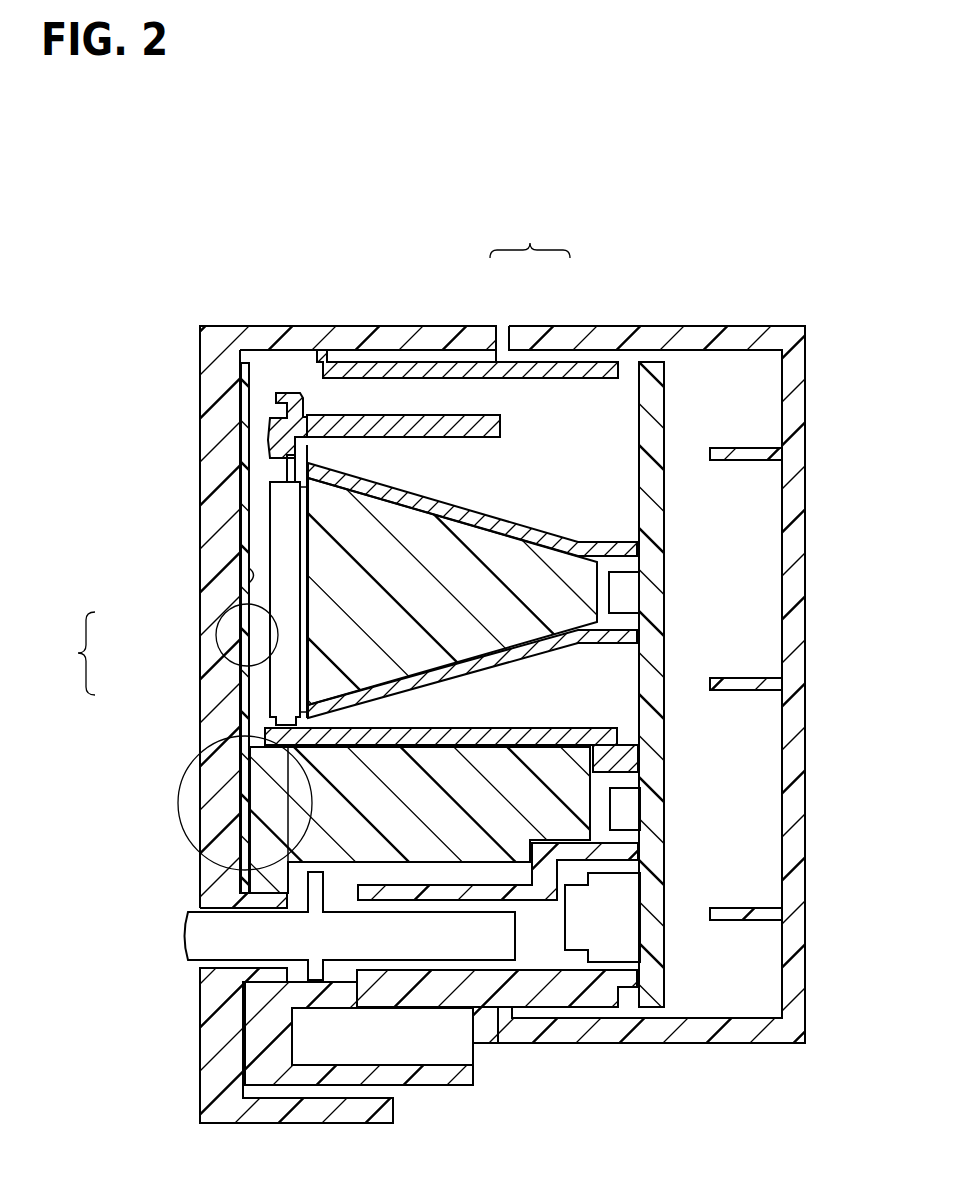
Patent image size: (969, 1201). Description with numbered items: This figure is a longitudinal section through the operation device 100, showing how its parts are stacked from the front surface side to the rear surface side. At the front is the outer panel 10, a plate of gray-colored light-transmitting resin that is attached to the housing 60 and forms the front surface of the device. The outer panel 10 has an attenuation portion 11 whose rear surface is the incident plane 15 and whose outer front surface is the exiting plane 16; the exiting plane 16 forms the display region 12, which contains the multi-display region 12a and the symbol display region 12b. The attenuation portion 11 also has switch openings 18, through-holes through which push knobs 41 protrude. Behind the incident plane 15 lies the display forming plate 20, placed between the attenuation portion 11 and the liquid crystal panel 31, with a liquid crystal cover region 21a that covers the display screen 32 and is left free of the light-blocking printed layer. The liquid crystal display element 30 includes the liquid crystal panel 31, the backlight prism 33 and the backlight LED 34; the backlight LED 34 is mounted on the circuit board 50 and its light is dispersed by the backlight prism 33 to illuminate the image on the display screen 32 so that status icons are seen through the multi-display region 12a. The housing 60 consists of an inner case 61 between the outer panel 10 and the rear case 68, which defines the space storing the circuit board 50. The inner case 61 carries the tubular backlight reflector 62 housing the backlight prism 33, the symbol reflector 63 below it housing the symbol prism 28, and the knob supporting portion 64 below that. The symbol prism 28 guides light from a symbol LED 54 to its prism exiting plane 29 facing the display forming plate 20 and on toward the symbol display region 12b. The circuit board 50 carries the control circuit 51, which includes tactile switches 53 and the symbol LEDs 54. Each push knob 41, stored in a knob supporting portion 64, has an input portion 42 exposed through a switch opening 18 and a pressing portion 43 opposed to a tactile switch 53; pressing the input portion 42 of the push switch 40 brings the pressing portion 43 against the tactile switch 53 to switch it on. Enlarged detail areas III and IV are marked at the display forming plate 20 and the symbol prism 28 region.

The operation device 100 is at (182, 326).
The outer panel 10 is at (207, 326).
The attenuation portion 11 is at (212, 410).
The exiting plane 16 is at (214, 440).
The incident plane 15 is at (243, 478).
The display forming plate 20 is at (252, 372).
The liquid crystal cover region 21a is at (246, 583).
The liquid crystal display element 30 is at (258, 515).
The liquid crystal panel 31 is at (312, 480).
The display screen 32 is at (300, 545).
The backlight prism 33 is at (342, 522).
The backlight LED 34 is at (623, 572).
The backlight reflector 62 is at (398, 510).
The symbol reflector 63 is at (445, 735).
The housing 60 is at (530, 237).
The inner case 61 is at (498, 328).
The rear case 68 is at (541, 328).
The circuit board 50 is at (655, 365).
The control circuit 51 is at (630, 684).
The symbol LED 54 is at (625, 792).
The display region 12 is at (69, 653).
The multi-display region 12a is at (190, 629).
The symbol display region 12b is at (190, 742).
The section III detail III is at (226, 614).
The section IV detail IV is at (205, 790).
The symbol prism 28 is at (487, 845).
The prism exiting plane 29 is at (245, 835).
The pressing portion 43 is at (537, 905).
The tactile switch 53 is at (610, 963).
The push switch 40 is at (178, 920).
The input portion 42 is at (195, 932).
The push knob 41 is at (397, 955).
The knob supporting portion 64 is at (455, 968).
The switch opening 18 is at (225, 960).